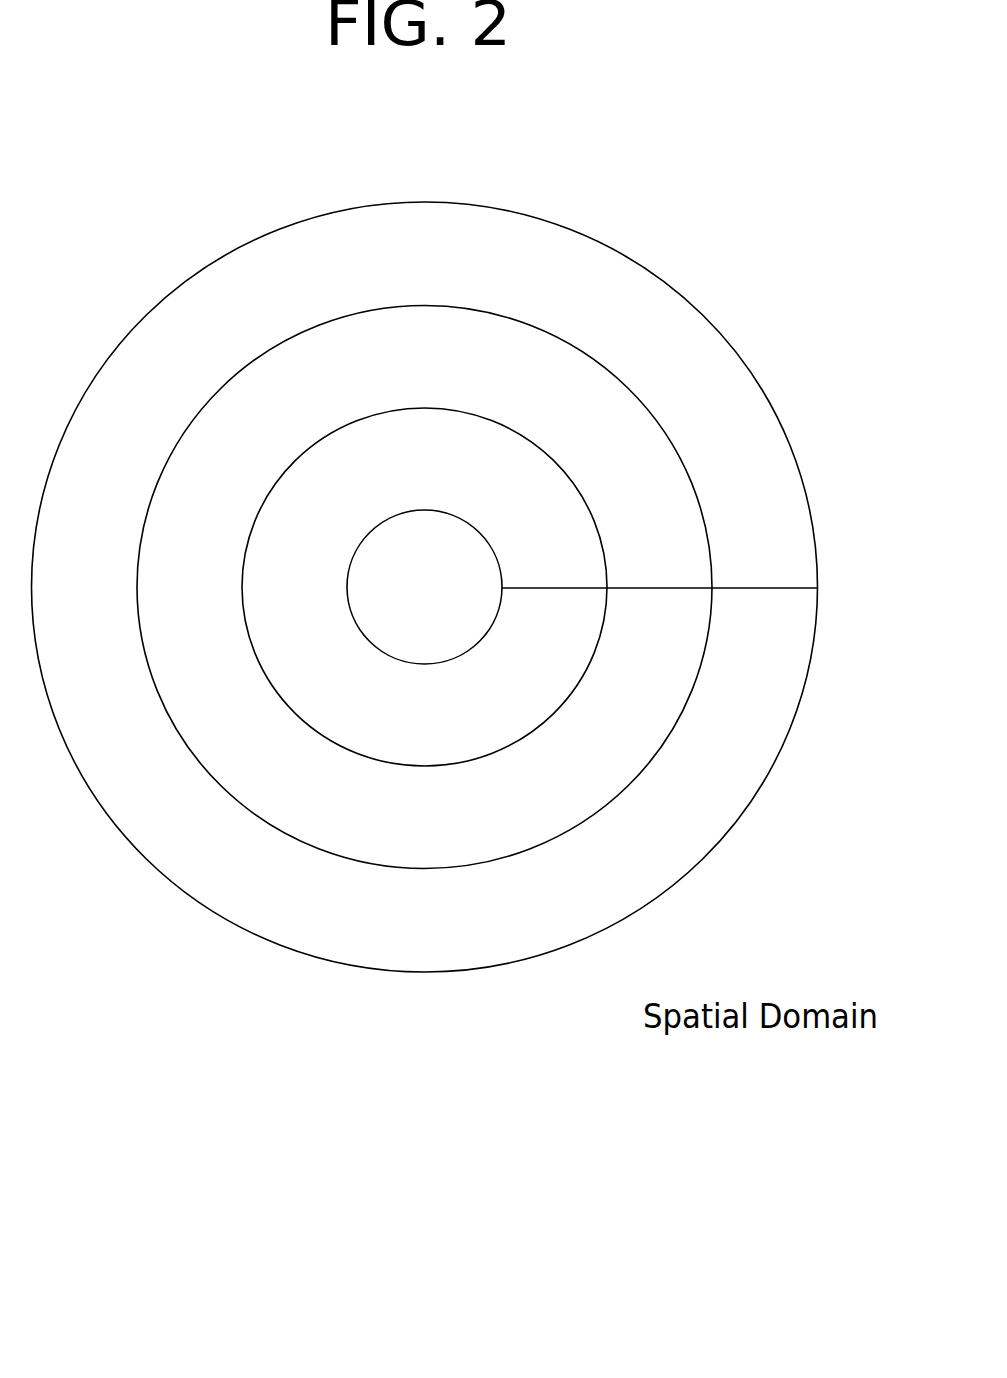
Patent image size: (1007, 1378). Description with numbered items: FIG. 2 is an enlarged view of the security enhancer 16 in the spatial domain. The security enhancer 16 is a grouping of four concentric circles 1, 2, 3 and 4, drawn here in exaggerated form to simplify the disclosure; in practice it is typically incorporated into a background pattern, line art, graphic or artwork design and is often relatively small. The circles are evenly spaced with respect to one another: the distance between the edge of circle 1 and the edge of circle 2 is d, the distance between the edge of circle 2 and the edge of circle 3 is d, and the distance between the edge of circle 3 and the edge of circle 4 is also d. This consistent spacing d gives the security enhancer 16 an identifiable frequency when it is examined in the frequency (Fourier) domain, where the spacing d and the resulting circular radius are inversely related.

The security enhancer 16 is at (425, 771).
The circle 1 is at (424, 587).
The circle 2 is at (424, 587).
The circle 3 is at (424, 587).
The circle 4 is at (425, 587).